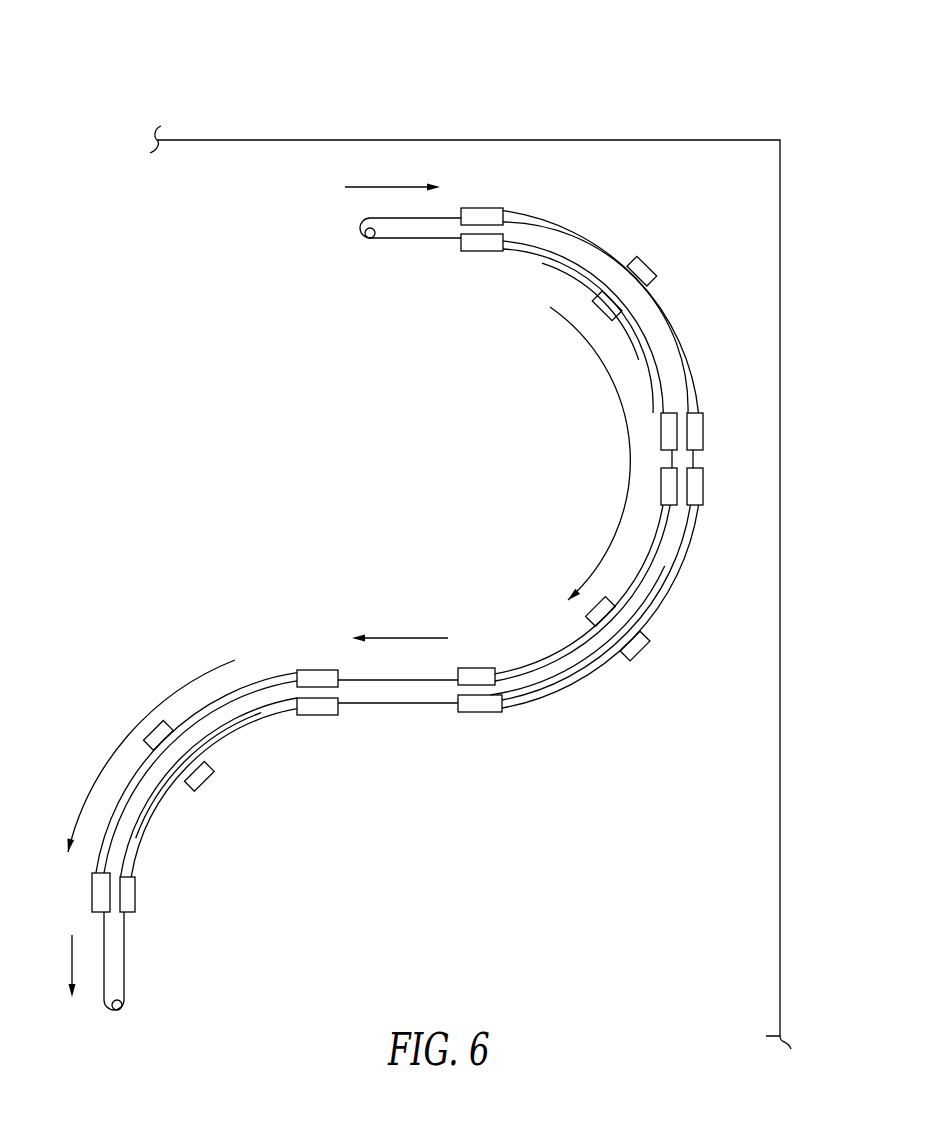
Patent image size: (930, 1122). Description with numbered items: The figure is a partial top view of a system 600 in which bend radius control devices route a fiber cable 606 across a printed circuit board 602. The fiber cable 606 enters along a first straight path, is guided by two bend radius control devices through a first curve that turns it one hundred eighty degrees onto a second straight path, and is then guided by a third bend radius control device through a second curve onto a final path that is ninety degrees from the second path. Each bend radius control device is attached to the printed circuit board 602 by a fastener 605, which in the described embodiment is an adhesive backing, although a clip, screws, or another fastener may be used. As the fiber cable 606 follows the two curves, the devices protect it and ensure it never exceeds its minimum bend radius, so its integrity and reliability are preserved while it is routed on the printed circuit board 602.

The system 600 is at (753, 88).
The printed circuit board 602 is at (781, 428).
The fastener 605 is at (644, 270).
The fiber cable 606 is at (400, 240).